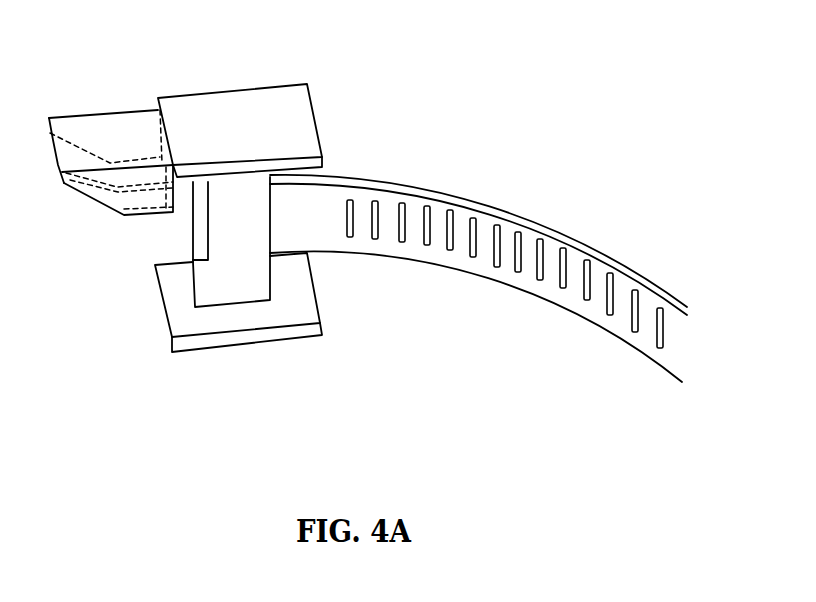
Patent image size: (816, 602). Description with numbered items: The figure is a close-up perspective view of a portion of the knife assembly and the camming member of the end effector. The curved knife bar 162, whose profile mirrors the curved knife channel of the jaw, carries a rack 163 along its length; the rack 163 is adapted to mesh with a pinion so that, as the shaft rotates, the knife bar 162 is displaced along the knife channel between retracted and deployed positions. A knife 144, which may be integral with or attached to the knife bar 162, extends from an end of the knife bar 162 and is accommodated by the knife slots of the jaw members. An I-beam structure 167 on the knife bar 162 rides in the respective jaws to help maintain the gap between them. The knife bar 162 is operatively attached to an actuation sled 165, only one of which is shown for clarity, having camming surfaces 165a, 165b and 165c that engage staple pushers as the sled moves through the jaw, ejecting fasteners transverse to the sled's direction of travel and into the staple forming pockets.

The knife 144 is at (200, 225).
The knife bar 162 is at (488, 215).
The rack 163 is at (560, 283).
The actuation sled 165 is at (131, 155).
The camming surface 165a is at (110, 190).
The camming surface 165b is at (101, 181).
The camming surface 165c is at (77, 145).
The I-beam structure 167 is at (268, 107).